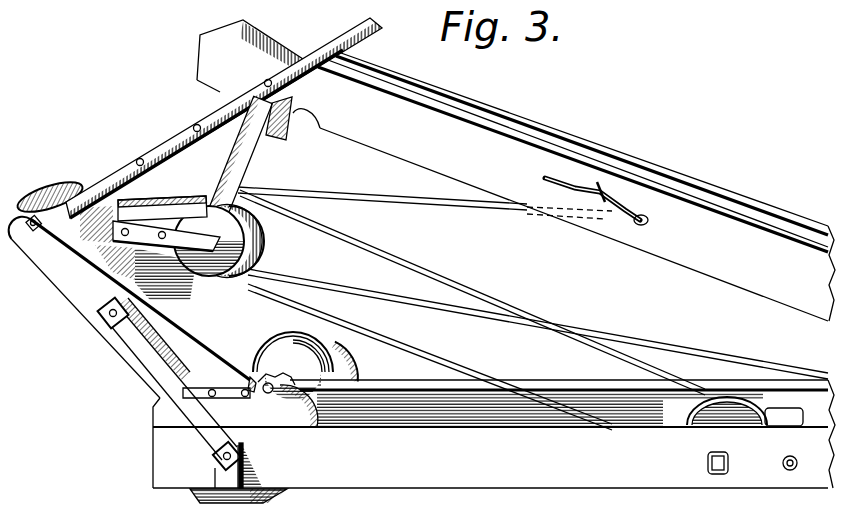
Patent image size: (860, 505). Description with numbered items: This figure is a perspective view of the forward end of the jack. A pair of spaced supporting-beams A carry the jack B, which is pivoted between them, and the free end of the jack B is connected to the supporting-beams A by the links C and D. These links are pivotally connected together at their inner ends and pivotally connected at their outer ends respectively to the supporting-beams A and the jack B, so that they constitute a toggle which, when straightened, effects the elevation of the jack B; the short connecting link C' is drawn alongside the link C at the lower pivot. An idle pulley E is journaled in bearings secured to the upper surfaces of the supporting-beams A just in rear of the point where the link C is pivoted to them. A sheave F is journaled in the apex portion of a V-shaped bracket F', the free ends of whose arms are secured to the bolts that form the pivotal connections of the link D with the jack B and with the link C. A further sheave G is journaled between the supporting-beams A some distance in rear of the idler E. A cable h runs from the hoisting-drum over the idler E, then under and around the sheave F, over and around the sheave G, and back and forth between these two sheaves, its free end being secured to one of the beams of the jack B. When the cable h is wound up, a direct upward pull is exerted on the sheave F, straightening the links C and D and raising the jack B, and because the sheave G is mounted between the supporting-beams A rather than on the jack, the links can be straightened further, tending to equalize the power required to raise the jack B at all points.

The supporting-beams A is at (566, 388).
The jack B is at (681, 180).
The link C is at (132, 302).
The link arm C' is at (164, 393).
The link D is at (116, 180).
The idle pulley E is at (320, 345).
The sheave F is at (201, 236).
The V-shaped bracket F' is at (241, 170).
The sheave G is at (711, 420).
The cable h is at (405, 203).